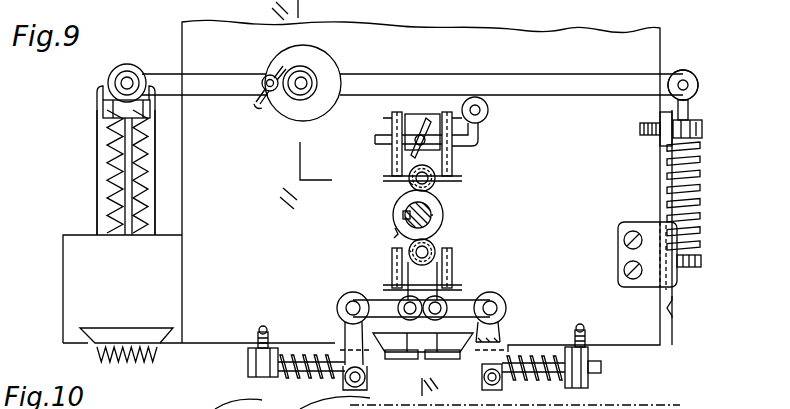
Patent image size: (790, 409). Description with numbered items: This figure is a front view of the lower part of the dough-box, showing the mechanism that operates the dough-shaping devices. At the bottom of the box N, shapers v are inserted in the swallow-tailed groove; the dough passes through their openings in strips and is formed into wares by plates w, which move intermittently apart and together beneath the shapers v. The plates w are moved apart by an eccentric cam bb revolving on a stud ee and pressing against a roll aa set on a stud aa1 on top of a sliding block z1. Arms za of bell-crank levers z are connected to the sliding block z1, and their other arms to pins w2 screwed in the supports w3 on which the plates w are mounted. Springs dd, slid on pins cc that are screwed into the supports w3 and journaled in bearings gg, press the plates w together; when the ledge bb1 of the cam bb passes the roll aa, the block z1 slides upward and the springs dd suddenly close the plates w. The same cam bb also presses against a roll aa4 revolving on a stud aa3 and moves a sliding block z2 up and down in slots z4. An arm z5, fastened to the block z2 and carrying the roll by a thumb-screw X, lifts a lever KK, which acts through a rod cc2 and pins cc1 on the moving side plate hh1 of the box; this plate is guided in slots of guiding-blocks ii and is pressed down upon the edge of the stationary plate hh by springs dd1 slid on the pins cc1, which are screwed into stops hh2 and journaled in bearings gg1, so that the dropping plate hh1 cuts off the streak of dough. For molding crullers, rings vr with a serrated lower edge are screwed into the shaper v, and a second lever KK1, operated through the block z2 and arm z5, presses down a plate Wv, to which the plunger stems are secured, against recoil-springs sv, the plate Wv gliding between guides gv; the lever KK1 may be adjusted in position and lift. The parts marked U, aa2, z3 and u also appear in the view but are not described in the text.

The plate Wv is at (103, 108).
The recoil-springs sv is at (112, 166).
The guides gv is at (97, 196).
The box N is at (122, 289).
The shapers v is at (126, 335).
The rings vr is at (157, 358).
The lever KK1 is at (188, 83).
The lever KK is at (519, 85).
The hub U is at (316, 84).
The slot sK is at (268, 74).
The stud aa3 is at (482, 98).
The arm z5 is at (480, 141).
The slots z4 is at (395, 123).
The sliding block z2 is at (426, 120).
The thumb-screw X is at (392, 164).
The roll aa4 is at (436, 181).
The pivot aa2 is at (409, 184).
The eccentric cam bb is at (444, 208).
The ledge bb1 is at (394, 224).
The stud ee is at (446, 218).
The roll aa is at (436, 247).
The stud aa1 is at (410, 251).
The bracket post z3 is at (392, 268).
The sliding block z1 is at (422, 281).
The bell-crank levers z is at (345, 296).
The arms za is at (421, 308).
The slide u is at (423, 336).
The plates w is at (443, 368).
The supports w3 is at (500, 352).
The pins w2 is at (364, 383).
The springs dd is at (292, 348).
The bearings gg is at (262, 372).
The pins cc is at (601, 366).
The stationary plate hh is at (671, 329).
The moving plate hh1 is at (673, 302).
The rod cc2 is at (689, 88).
The pins cc1 is at (689, 106).
The bearings gg1 is at (702, 129).
The springs dd1 is at (701, 186).
The guiding-blocks ii is at (618, 254).
The stops hh2 is at (701, 262).